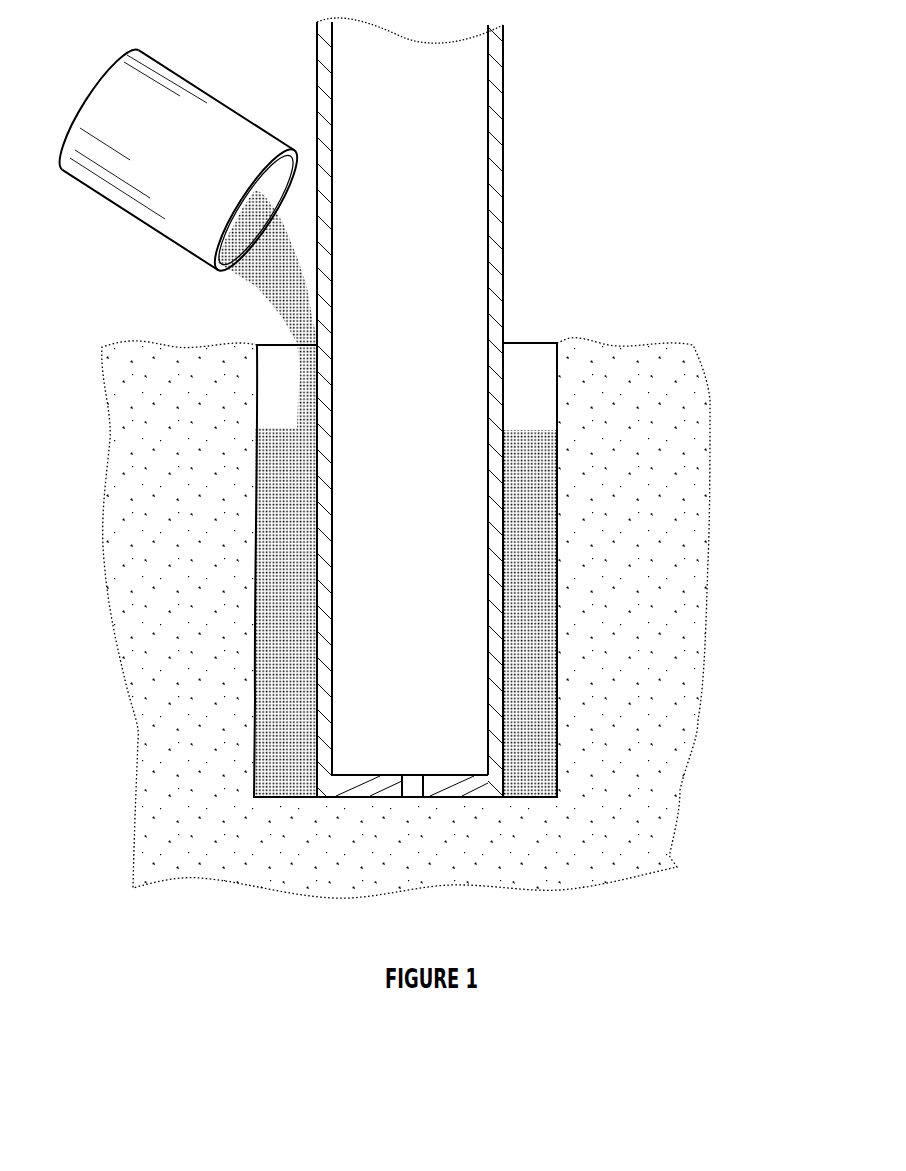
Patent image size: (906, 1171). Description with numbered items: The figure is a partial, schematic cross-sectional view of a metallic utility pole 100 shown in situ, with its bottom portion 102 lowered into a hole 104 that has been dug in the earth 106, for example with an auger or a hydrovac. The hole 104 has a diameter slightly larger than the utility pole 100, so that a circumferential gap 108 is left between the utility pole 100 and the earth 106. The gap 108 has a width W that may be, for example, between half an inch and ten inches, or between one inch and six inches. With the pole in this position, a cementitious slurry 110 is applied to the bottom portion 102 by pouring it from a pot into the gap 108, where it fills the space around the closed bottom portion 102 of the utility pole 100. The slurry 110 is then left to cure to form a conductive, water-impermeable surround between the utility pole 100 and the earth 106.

The utility pole 100 is at (495, 132).
The bottom portion 102 is at (322, 752).
The hole 104 is at (521, 352).
The earth 106 is at (636, 654).
The circumferential gap 108 is at (552, 393).
The cementitious slurry 110 is at (258, 288).
The width of the gap W is at (555, 487).